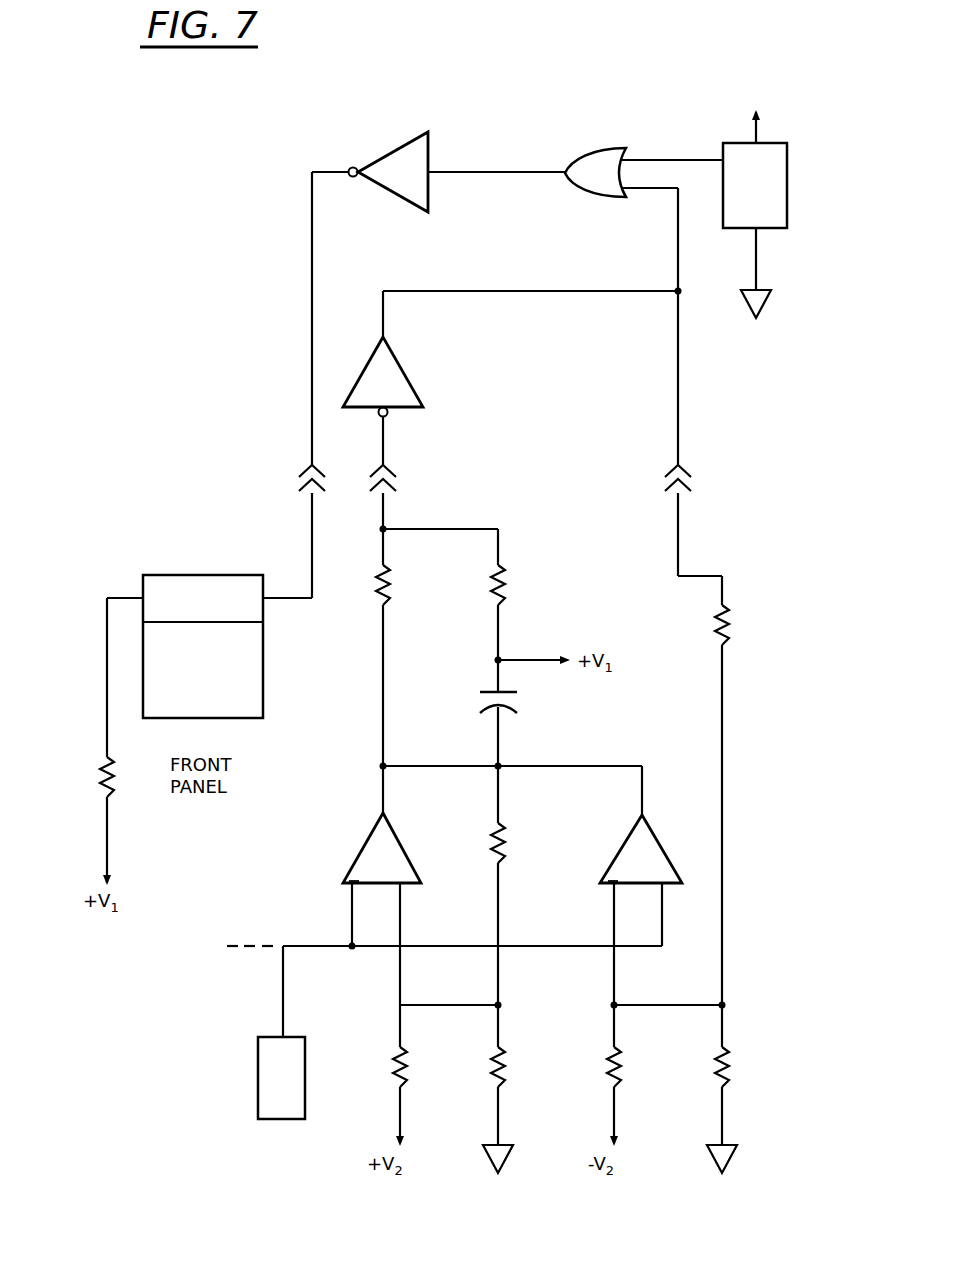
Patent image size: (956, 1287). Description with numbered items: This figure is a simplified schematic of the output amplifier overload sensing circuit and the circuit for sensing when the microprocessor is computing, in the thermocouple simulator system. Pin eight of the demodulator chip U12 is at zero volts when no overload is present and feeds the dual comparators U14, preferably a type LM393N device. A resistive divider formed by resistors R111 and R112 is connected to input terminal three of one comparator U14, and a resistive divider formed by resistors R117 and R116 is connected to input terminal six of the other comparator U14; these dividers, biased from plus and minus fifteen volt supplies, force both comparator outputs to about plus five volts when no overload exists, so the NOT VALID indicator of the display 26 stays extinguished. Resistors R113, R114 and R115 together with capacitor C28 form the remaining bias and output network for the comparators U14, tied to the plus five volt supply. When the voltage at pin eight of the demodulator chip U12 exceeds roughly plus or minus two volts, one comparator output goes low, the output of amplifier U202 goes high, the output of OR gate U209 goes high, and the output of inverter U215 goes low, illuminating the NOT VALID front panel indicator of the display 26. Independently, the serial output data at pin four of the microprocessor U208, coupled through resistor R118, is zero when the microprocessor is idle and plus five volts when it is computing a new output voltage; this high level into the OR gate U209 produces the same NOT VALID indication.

The LED display 26 is at (240, 575).
The inverter U215 is at (438, 172).
The OR gate U209 is at (644, 169).
The microprocessor U208 is at (755, 204).
The amplifier U202 is at (383, 378).
The dual comparators U14 is at (512, 885).
The demodulator chip U12 is at (281, 1032).
The capacitor C28 is at (521, 720).
The resistor R111 is at (426, 1075).
The resistor R112 is at (519, 1089).
The resistor R113 is at (524, 885).
The resistor R114 is at (408, 647).
The resistor R115 is at (525, 610).
The resistor R116 is at (744, 1089).
The resistor R117 is at (640, 1075).
The resistor R118 is at (748, 790).